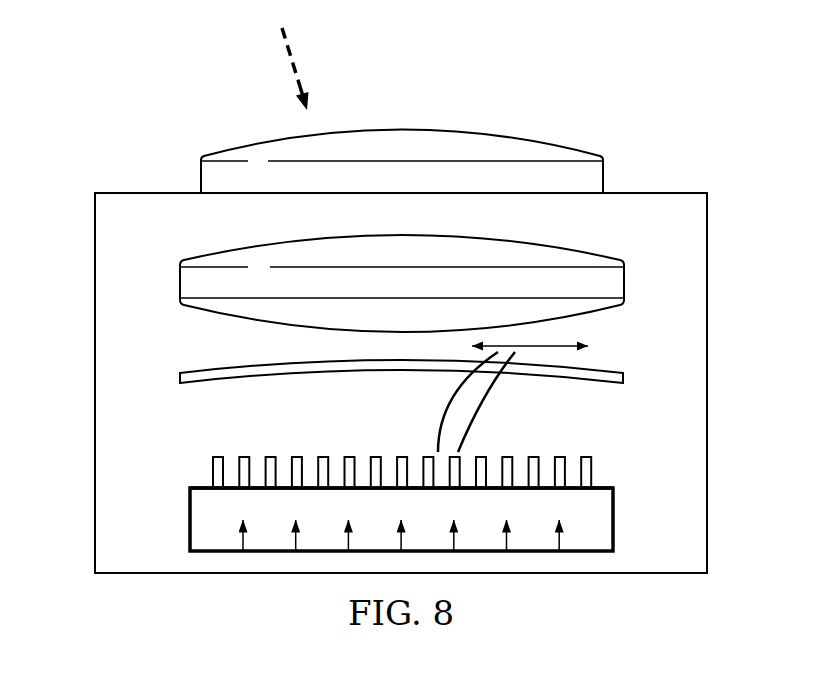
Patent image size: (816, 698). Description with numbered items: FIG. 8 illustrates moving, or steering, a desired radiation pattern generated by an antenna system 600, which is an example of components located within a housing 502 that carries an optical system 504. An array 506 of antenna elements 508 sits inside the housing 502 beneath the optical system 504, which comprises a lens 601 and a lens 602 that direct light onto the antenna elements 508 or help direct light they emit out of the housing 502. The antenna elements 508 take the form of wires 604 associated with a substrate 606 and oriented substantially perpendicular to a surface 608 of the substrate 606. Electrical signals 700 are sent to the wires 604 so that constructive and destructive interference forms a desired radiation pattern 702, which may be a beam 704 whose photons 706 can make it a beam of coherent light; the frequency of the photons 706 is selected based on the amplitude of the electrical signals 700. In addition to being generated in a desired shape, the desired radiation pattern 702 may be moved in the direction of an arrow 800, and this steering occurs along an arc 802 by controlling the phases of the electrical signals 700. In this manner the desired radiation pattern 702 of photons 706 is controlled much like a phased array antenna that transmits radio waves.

The housing 502 is at (707, 385).
The optical system 504 is at (282, 66).
The array 506 is at (103, 385).
The antenna elements 508 is at (117, 447).
The antenna system 600 is at (560, 67).
The lens 601 is at (475, 132).
The lens 602 is at (180, 283).
The wires 604 is at (594, 462).
The substrate 606 is at (603, 522).
The surface 608 is at (190, 488).
The electrical signals 700 is at (293, 540).
The desired radiation pattern 702 is at (521, 393).
The beam 704 is at (448, 400).
The photons 706 is at (487, 420).
The arrow 800 is at (562, 343).
The arc 802 is at (265, 380).